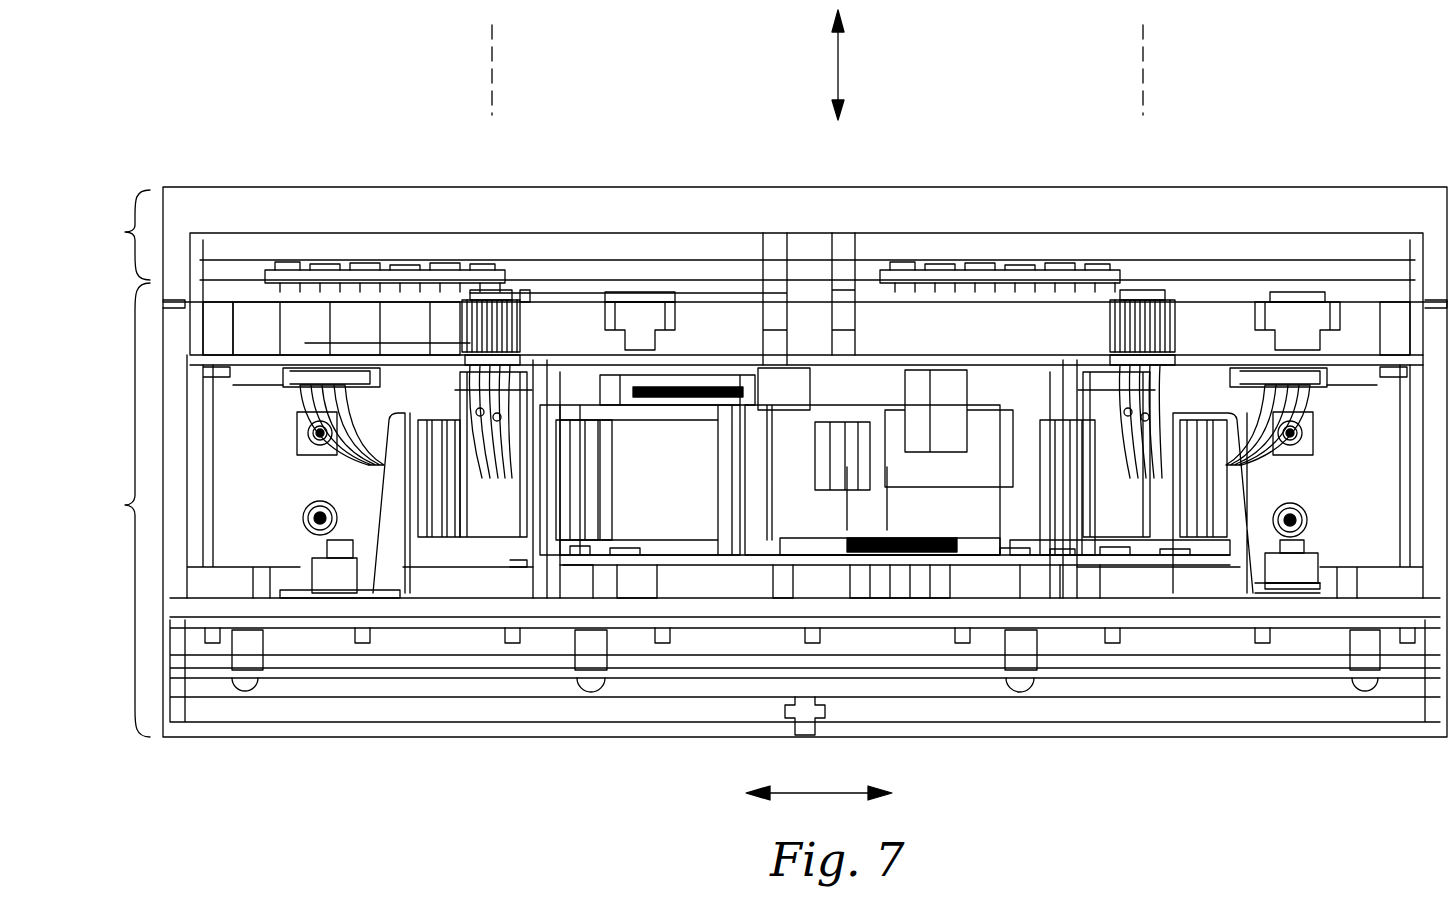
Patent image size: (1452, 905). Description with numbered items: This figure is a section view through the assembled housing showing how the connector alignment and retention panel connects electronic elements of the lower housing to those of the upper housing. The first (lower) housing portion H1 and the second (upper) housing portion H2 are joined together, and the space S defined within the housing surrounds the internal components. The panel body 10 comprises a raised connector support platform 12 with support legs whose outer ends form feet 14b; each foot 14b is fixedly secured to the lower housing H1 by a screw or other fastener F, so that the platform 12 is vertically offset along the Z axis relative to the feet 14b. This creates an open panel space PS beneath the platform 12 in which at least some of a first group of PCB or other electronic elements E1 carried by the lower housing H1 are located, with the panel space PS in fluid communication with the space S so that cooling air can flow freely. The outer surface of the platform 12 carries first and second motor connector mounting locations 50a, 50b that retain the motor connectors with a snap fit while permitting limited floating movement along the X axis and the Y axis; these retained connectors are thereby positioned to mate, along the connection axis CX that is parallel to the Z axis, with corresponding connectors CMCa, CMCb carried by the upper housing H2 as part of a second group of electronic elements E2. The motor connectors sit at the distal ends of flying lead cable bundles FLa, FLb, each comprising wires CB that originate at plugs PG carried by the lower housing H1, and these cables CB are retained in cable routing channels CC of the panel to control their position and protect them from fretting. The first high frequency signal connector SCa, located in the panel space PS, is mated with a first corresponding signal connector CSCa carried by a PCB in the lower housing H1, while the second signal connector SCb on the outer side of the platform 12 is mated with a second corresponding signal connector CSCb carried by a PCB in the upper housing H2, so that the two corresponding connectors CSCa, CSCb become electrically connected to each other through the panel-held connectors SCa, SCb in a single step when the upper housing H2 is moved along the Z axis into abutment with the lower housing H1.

The space S is at (243, 425).
The printed circuit board PCB is at (470, 285).
The first corresponding motor connector CMCa is at (480, 300).
The second group of electronic elements E2 is at (690, 300).
The second corresponding signal connector CSCb is at (720, 375).
The second corresponding motor connector CMCb is at (1140, 300).
The connection axis CX is at (492, 42).
The Z axis Z is at (840, 68).
The X axis X is at (822, 798).
The second (upper) housing portion H2 is at (116, 235).
The first (lower) housing portion H1 is at (116, 510).
The plug PG is at (300, 430).
The first flying lead cable bundle FLa is at (355, 448).
The second flying lead cable bundle FLb is at (1318, 410).
The foot 14b is at (362, 550).
The fastener F is at (325, 548).
The first motor connector mounting location 50a is at (545, 440).
The second motor connector mounting location 50b is at (1173, 392).
The second high frequency signal connector SCb is at (665, 400).
The connector support platform 12 is at (797, 417).
The panel body 10 is at (387, 560).
The panel space PS is at (447, 558).
The cable routing channel CC is at (477, 510).
The cables CB is at (493, 493).
The first group of electronic elements E1 is at (730, 548).
The first high frequency signal connector SCa is at (790, 550).
The first corresponding signal connector CSCa is at (1000, 545).